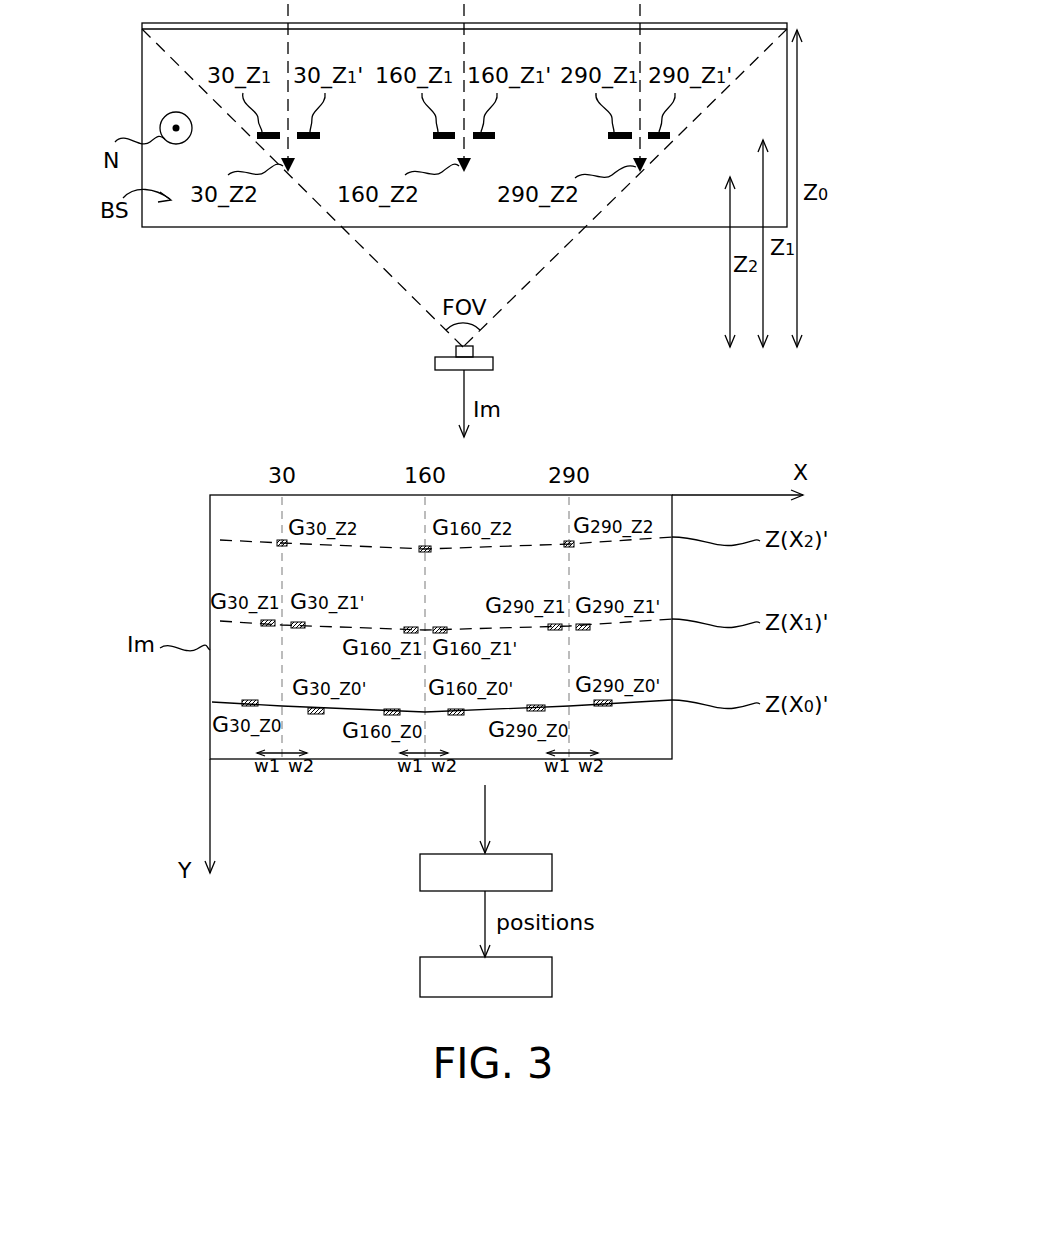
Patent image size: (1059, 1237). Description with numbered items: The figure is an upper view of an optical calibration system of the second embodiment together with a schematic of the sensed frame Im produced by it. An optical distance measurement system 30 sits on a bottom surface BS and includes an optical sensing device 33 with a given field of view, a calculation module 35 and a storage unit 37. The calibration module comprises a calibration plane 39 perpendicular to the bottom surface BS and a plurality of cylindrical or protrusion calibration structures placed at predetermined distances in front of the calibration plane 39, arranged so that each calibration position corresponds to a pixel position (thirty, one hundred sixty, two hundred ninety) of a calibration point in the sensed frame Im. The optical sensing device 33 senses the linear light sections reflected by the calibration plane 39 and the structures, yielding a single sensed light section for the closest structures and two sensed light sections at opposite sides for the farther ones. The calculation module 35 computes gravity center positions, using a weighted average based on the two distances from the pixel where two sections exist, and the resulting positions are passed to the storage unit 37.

The optical distance measurement system 30 is at (464, 233).
The optical sensing device 33 is at (473, 350).
The calculation module 35 is at (552, 873).
The storage unit 37 is at (552, 978).
The calibration plane 39 is at (787, 23).